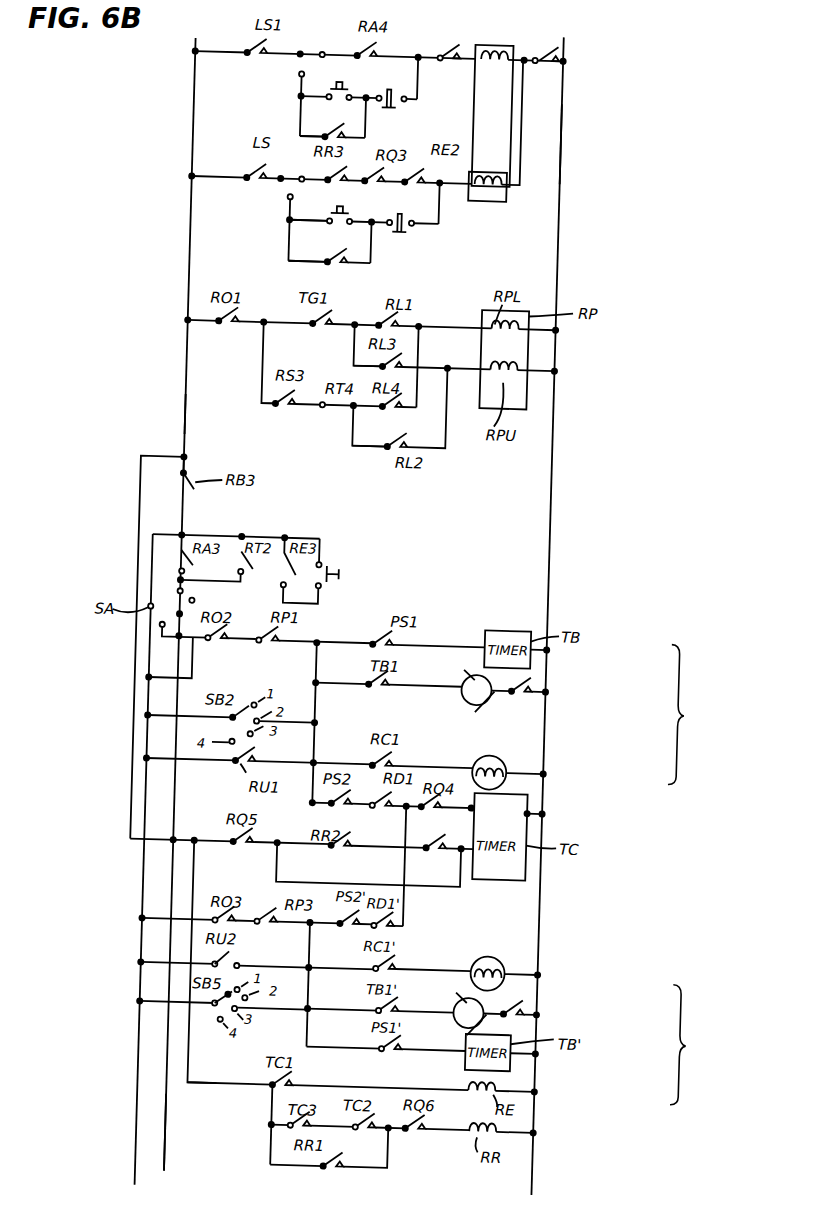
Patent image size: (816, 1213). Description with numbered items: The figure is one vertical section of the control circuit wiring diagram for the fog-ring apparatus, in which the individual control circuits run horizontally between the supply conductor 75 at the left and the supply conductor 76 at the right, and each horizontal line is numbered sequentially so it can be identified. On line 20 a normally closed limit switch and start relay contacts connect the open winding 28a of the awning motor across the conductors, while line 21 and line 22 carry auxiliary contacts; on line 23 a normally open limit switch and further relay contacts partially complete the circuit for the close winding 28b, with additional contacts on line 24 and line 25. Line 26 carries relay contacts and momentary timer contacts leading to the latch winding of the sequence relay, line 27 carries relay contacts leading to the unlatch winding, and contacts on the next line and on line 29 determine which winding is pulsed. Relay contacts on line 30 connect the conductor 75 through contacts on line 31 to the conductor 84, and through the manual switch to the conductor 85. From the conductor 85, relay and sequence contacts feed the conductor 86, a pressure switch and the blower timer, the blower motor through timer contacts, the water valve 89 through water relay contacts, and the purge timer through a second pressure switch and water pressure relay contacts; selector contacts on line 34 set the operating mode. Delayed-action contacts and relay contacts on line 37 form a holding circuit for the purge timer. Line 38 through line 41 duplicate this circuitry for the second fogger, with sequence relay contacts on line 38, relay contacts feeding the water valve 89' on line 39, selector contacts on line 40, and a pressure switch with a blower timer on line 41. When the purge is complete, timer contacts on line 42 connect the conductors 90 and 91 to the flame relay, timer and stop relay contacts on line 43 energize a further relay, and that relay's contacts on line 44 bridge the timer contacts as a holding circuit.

The line 20 is at (112, 58).
The line 21 is at (112, 99).
The line 22 is at (112, 140).
The line 23 is at (112, 182).
The line 24 is at (112, 222).
The line 25 is at (112, 264).
The line 26 is at (112, 328).
The line 27 is at (112, 367).
The line 29 is at (112, 447).
The line 30 is at (112, 487).
The line 31 is at (112, 562).
The line 34 is at (112, 723).
The line 37 is at (112, 843).
The line 38 is at (112, 924).
The line 39 is at (112, 964).
The line 40 is at (112, 1005).
The line 41 is at (112, 1045).
The line 42 is at (112, 1087).
The line 43 is at (112, 1125).
The line 44 is at (112, 1163).
The open winding 28a is at (477, 52).
The close winding 28b is at (486, 187).
The conductor 75 is at (180, 418).
The conductor 76 is at (548, 138).
The conductor 84 is at (180, 1160).
The conductor 85 is at (151, 1188).
The conductor 86 is at (318, 662).
The water valve 89 is at (496, 759).
The water valve 89' is at (495, 960).
The conductor 90 is at (137, 846).
The conductor 91 is at (203, 1092).